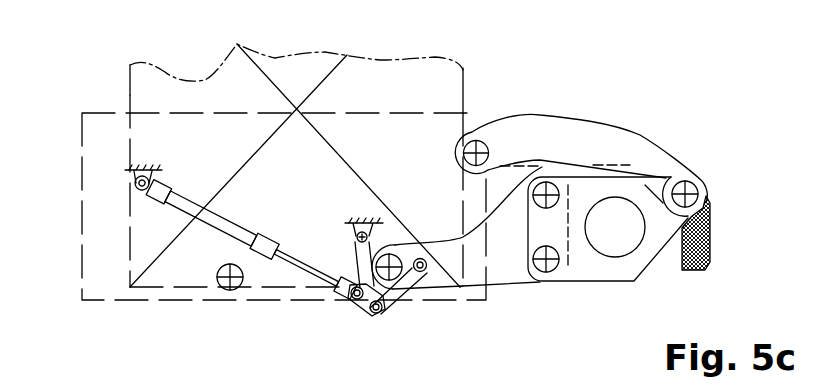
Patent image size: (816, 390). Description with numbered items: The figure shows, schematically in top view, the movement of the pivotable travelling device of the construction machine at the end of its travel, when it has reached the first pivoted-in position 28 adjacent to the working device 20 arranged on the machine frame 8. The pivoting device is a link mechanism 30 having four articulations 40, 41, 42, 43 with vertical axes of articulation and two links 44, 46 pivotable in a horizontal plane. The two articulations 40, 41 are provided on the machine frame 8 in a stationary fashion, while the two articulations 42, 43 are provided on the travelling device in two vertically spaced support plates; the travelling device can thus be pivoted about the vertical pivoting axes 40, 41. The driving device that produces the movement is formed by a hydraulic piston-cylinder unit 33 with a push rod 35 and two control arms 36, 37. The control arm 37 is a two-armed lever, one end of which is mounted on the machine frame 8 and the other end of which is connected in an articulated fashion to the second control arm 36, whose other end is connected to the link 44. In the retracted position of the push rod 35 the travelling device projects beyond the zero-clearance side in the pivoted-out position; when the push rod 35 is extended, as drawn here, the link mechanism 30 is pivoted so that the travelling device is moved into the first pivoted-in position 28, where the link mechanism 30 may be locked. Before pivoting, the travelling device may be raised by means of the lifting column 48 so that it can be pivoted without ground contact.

The machine frame 8 is at (303, 112).
The working device 20 is at (130, 93).
The first pivoted-in position 28 is at (697, 140).
The link mechanism 30 is at (576, 78).
The hydraulic piston-cylinder unit 33 is at (212, 220).
The push rod 35 is at (318, 273).
The second control arm 36 is at (404, 295).
The control arm 37 is at (360, 270).
The articulation 40 is at (394, 262).
The articulation 41 is at (480, 145).
The articulation 42 is at (540, 203).
The articulation 43 is at (688, 190).
The link 44 is at (512, 258).
The link 46 is at (592, 156).
The lifting column 48 is at (617, 242).